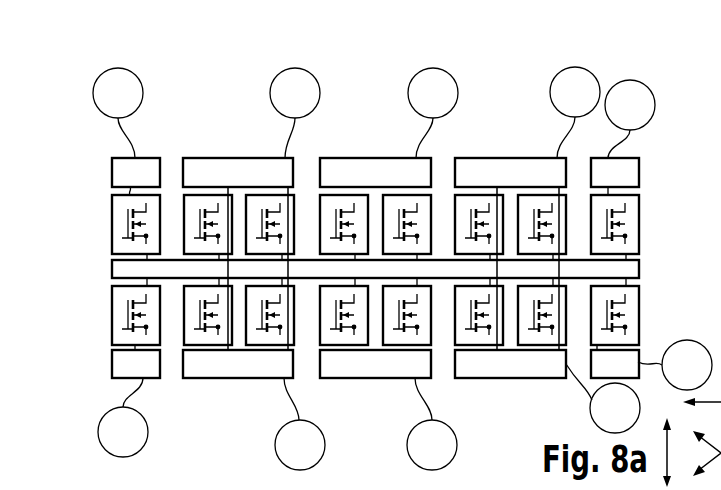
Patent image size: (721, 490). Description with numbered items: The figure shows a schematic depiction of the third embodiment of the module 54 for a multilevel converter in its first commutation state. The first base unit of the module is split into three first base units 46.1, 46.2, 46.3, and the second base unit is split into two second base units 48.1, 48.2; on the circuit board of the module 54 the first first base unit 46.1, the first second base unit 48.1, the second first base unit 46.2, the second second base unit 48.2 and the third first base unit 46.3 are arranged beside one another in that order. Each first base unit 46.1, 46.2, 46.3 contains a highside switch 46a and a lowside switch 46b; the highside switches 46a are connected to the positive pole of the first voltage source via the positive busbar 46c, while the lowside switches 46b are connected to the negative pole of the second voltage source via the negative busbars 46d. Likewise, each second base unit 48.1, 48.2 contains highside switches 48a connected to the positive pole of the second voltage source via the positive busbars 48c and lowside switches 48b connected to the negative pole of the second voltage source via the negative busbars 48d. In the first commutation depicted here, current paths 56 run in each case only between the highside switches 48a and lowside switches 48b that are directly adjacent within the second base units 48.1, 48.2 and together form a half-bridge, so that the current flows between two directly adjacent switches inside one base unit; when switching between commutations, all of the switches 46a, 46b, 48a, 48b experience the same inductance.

The module 54 is at (93, 147).
The first first base unit 46.1 is at (164, 106).
The first second base unit 48.1 is at (259, 106).
The second first base unit 46.2 is at (394, 106).
The second second base unit 48.2 is at (535, 107).
The third first base unit 46.3 is at (659, 138).
The highside switch 46a is at (112, 215).
The lowside switch 46b is at (112, 316).
The positive busbar 46c is at (122, 175).
The negative busbar 46d is at (122, 372).
The highside switch 48a is at (200, 194).
The lowside switch 48b is at (203, 346).
The positive busbar 48c is at (229, 167).
The negative busbar 48d is at (238, 368).
The current path 56 is at (322, 259).